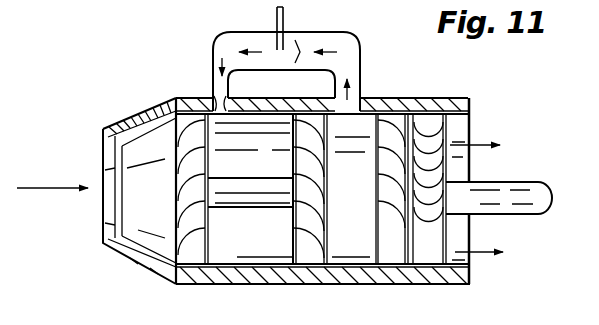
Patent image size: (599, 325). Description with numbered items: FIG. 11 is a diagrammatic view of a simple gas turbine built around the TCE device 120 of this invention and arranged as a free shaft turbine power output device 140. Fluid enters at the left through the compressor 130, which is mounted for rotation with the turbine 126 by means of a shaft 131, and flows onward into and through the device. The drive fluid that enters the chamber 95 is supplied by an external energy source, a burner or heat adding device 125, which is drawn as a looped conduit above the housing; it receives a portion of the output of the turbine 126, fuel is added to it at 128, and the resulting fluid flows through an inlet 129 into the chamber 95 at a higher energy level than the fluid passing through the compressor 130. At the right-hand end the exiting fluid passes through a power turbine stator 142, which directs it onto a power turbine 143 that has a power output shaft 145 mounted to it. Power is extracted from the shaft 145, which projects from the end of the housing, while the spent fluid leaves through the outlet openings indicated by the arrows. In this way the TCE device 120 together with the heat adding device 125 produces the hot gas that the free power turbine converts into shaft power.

The chamber 95 is at (271, 148).
The TCE device 120 is at (226, 240).
The heat adding device 125 is at (350, 70).
The turbine 126 is at (302, 256).
The fuel addition point 128 is at (284, 21).
The inlet 129 is at (213, 100).
The compressor 130 is at (177, 130).
The shaft 131 is at (263, 201).
The free shaft turbine power output device 140 is at (482, 100).
The power turbine stator 142 is at (393, 125).
The power turbine 143 is at (435, 136).
The power output shaft 145 is at (513, 190).